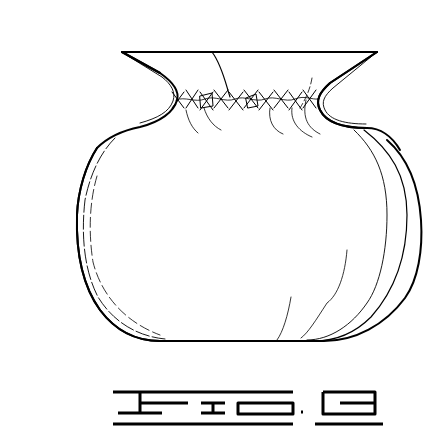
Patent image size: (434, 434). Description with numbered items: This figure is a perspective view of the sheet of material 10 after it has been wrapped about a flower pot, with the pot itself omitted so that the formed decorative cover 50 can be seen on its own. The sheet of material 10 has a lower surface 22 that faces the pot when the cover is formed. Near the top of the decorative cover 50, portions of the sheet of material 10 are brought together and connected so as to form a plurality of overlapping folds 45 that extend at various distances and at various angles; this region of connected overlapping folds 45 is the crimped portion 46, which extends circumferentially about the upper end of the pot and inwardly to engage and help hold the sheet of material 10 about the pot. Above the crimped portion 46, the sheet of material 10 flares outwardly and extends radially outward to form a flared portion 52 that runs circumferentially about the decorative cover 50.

The sheet of material 10 is at (374, 123).
The lower surface 22 is at (345, 70).
The overlapping folds 45 is at (212, 52).
The crimped portion 46 is at (173, 95).
The decorative cover 50 is at (105, 132).
The flared portion 52 is at (134, 60).